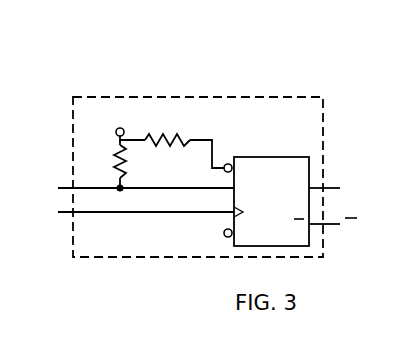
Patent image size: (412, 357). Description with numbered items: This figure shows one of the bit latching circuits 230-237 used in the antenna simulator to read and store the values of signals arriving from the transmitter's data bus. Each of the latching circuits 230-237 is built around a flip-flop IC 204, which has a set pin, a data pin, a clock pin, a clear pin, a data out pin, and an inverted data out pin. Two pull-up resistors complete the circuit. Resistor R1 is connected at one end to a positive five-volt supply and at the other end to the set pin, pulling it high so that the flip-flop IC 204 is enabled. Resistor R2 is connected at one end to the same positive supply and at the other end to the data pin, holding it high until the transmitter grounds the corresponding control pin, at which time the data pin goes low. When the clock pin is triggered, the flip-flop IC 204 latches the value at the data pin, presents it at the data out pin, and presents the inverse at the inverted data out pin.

The bit latching circuits 230-237 is at (297, 96).
The flip-flop IC 204 is at (290, 156).
The resistor R1 is at (167, 132).
The resistor R2 is at (105, 161).